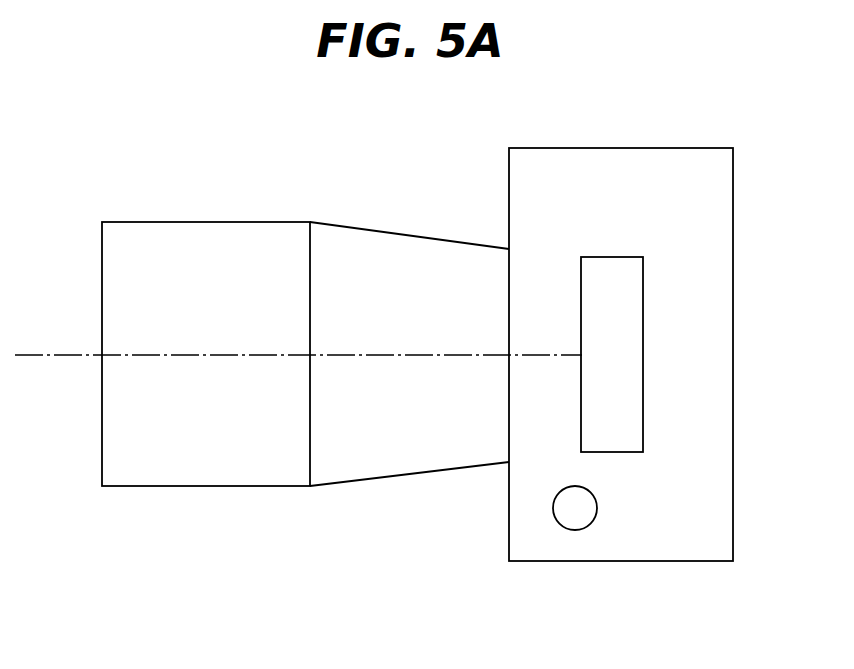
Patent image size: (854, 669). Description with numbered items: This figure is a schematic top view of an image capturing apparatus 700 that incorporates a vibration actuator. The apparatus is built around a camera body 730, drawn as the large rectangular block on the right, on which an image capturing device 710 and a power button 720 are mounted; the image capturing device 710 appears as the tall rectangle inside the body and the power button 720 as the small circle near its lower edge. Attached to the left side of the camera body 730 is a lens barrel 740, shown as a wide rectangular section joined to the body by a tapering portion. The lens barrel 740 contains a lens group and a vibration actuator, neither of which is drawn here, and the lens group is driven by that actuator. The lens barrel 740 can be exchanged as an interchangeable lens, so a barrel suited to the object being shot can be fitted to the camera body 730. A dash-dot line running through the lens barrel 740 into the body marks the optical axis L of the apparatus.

The image capturing apparatus 700 is at (403, 130).
The image capturing device 710 is at (634, 300).
The power button 720 is at (573, 520).
The camera body 730 is at (669, 552).
The lens barrel 740 is at (219, 233).
The optical axis L is at (58, 357).